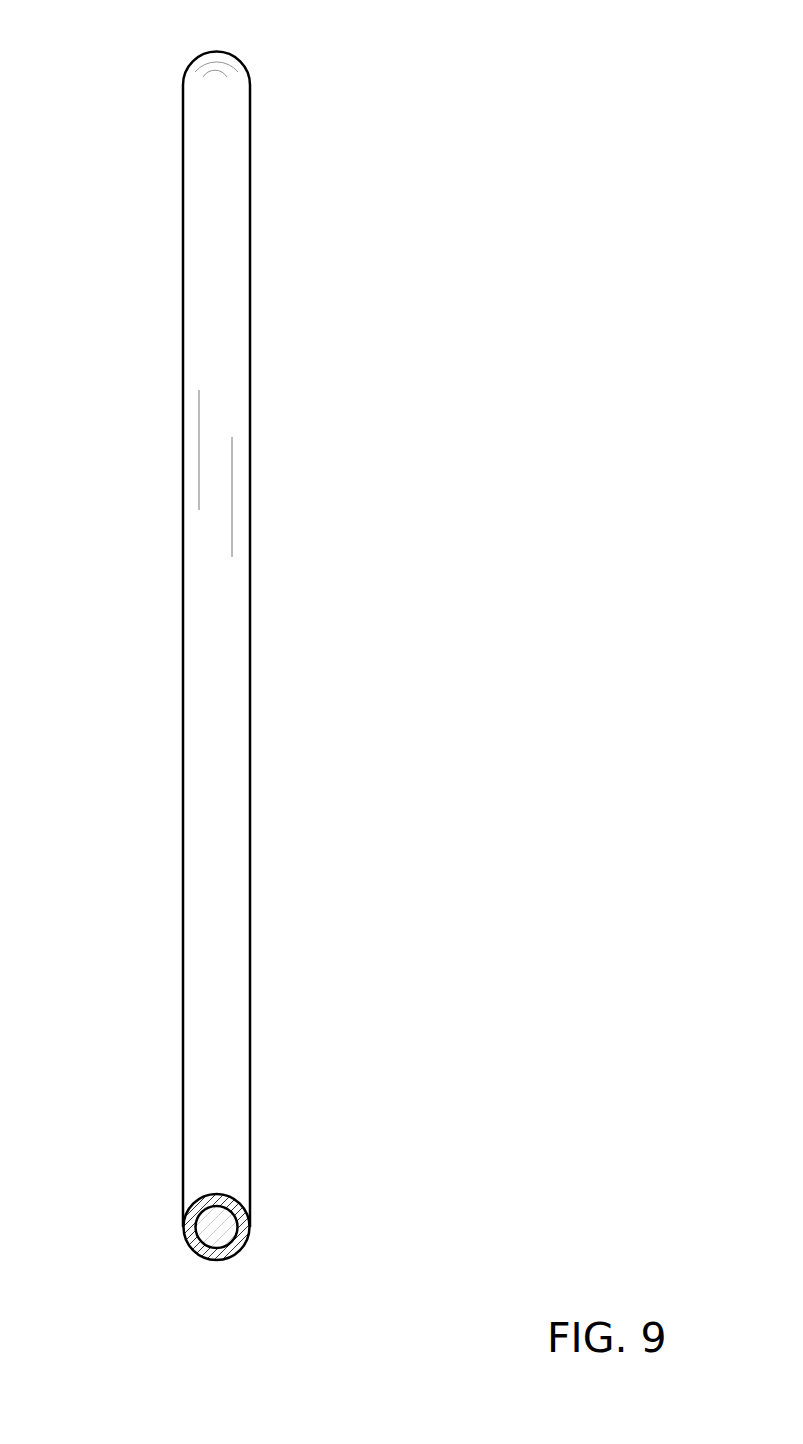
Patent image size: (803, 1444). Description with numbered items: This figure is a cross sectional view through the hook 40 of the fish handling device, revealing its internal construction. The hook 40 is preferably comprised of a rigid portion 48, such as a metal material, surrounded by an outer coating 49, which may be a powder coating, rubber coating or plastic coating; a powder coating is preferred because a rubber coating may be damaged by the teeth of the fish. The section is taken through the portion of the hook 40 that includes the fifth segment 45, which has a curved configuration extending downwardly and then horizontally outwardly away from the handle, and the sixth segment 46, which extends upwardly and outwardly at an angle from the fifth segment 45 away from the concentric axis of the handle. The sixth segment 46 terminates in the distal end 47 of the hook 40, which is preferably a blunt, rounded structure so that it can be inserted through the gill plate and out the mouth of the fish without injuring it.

The hook 40 is at (250, 885).
The fifth segment 45 is at (212, 1194).
The sixth segment 46 is at (250, 384).
The distal end 47 is at (232, 55).
The rigid portion 48 is at (218, 1228).
The outer coating 49 is at (195, 1248).